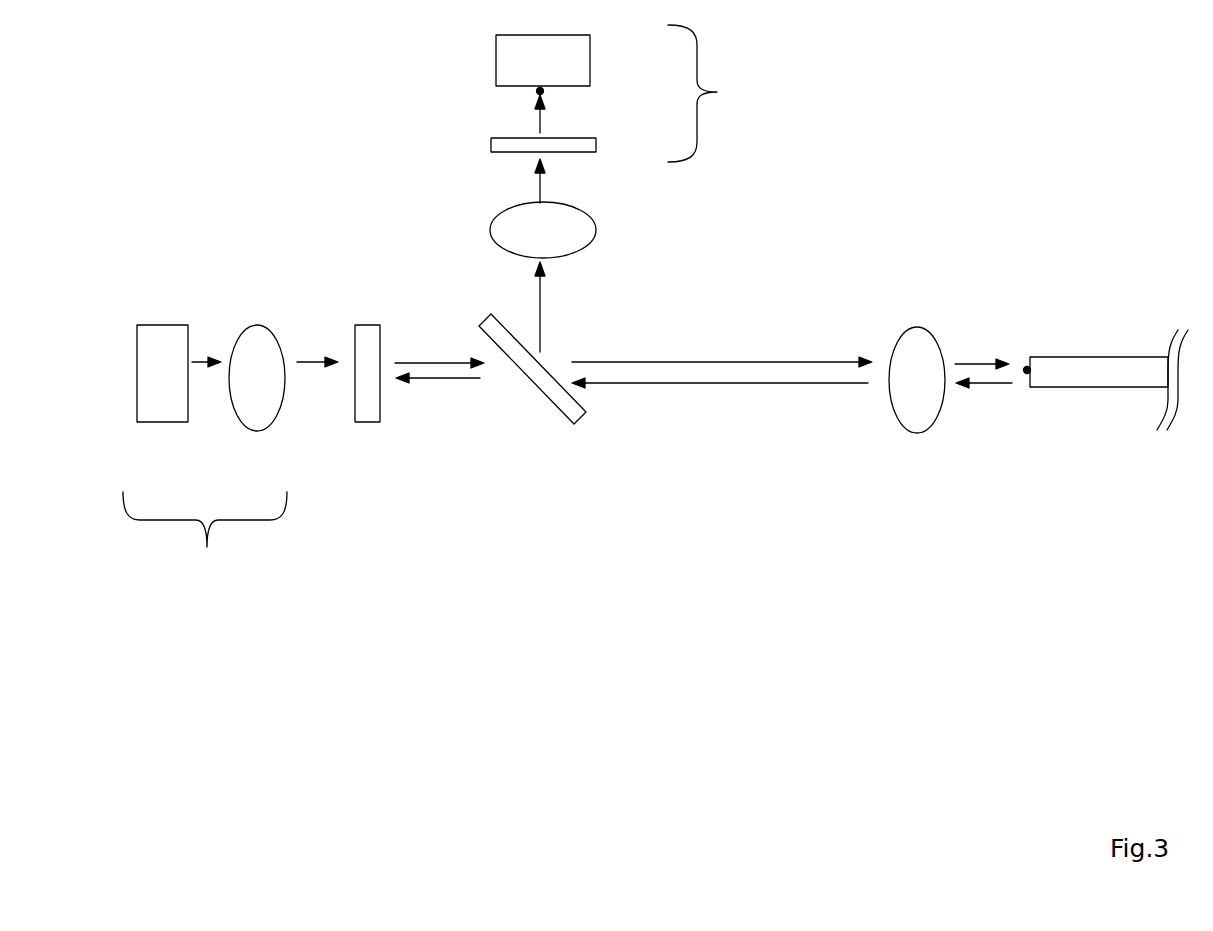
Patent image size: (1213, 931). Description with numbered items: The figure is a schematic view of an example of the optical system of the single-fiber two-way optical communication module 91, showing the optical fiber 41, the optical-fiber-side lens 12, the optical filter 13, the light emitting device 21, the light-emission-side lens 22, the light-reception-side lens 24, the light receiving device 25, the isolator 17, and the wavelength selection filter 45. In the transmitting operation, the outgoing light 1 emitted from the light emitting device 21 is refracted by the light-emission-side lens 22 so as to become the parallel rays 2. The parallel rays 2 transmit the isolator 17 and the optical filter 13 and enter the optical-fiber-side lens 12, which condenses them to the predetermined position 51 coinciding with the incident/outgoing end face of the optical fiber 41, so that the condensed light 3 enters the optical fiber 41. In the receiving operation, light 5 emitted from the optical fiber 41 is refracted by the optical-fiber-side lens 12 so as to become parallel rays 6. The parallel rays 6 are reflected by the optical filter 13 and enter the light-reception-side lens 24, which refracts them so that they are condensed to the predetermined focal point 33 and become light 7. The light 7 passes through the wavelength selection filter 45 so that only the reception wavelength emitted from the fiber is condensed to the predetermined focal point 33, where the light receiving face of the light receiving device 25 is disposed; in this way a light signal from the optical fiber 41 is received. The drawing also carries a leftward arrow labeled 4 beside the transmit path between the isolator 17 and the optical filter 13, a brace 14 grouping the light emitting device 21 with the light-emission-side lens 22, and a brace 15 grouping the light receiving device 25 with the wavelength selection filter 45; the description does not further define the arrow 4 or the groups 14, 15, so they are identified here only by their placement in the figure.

The outgoing light 1 is at (202, 360).
The parallel rays 2 is at (309, 360).
The condensed light 3 is at (975, 363).
The back-reflected light 4 is at (451, 380).
The light 5 is at (992, 385).
The parallel rays 6 is at (540, 310).
The light 7 is at (535, 118).
The optical-fiber-side lens 12 is at (922, 432).
The optical filter 13 is at (583, 425).
The light source unit 14 is at (205, 538).
The detection unit 15 is at (708, 93).
The isolator 17 is at (365, 422).
The light emitting device 21 is at (160, 422).
The light-emission-side lens 22 is at (270, 431).
The light-reception-side lens 24 is at (596, 230).
The light receiving device 25 is at (590, 58).
The predetermined focal point 33 is at (533, 97).
The optical fiber 41 is at (1112, 387).
The wavelength selection filter 45 is at (596, 145).
The predetermined position 51 is at (1030, 365).
The single-fiber two-way optical communication module 91 is at (863, 143).